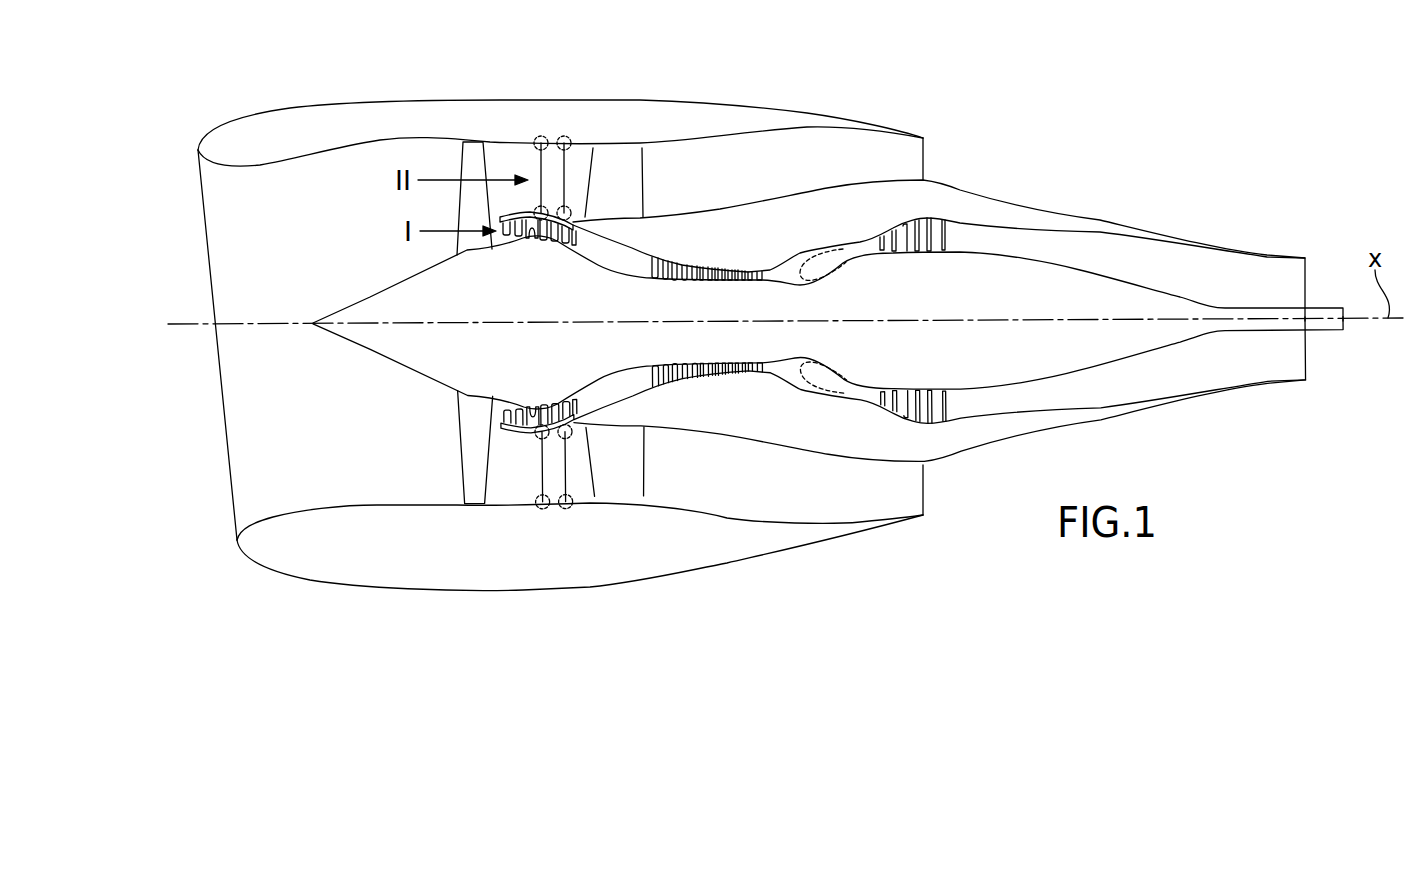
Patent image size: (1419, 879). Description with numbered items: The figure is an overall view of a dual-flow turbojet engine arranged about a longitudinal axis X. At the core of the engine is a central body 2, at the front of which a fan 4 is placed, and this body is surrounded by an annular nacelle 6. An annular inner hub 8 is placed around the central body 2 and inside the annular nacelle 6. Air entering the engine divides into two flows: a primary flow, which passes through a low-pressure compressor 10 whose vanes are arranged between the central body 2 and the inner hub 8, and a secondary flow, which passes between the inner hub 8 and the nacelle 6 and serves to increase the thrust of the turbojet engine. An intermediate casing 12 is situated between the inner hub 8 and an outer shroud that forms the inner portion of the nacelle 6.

The central body 2 is at (557, 307).
The fan 4 is at (473, 468).
The annular nacelle 6 is at (444, 108).
The annular inner hub 8 is at (595, 227).
The low-pressure compressor 10 is at (507, 412).
The intermediate casing 12 is at (550, 163).